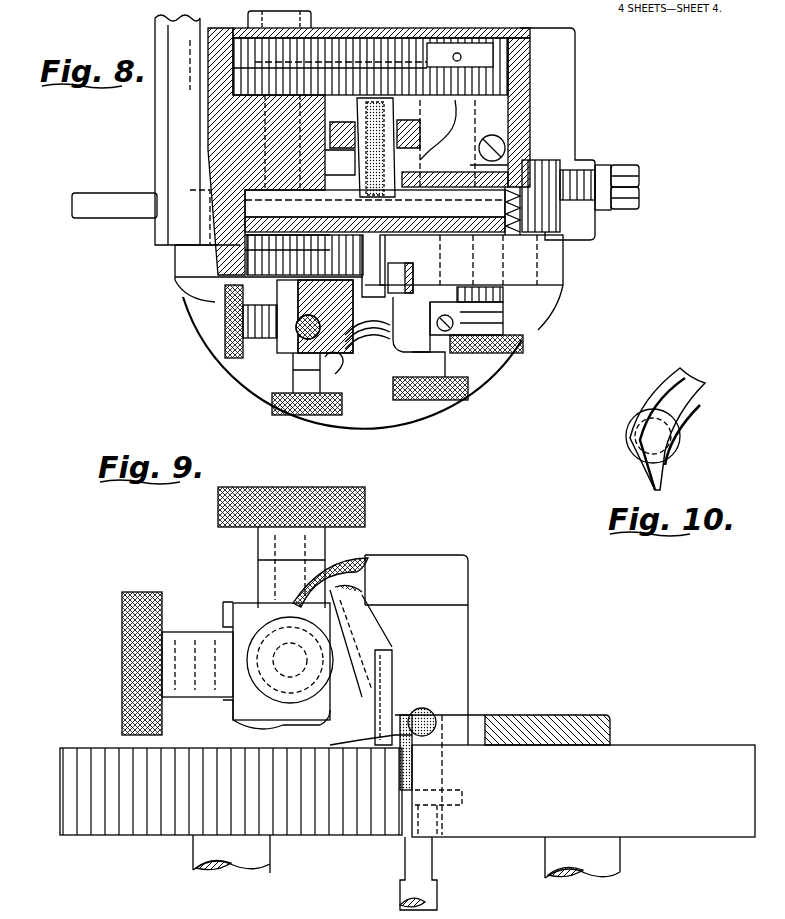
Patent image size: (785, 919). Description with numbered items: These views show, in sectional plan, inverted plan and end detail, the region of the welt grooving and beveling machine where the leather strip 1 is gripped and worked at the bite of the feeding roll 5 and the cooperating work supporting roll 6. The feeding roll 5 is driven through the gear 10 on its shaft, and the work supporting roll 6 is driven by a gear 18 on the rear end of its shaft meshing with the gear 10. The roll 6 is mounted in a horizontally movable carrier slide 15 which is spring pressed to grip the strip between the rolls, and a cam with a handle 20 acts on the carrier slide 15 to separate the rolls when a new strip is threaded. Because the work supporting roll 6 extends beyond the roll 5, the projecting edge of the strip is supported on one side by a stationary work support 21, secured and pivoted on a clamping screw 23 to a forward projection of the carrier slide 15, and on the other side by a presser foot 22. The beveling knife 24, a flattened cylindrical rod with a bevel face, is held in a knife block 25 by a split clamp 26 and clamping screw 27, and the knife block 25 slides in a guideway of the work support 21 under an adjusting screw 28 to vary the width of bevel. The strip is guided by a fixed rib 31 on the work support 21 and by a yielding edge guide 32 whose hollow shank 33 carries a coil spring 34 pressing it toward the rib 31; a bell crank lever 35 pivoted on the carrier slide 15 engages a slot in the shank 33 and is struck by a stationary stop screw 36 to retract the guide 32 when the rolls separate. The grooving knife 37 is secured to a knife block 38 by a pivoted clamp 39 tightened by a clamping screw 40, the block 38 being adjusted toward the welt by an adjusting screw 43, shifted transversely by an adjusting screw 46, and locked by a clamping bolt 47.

In FIG. 8, the leather strip 1 is at (395, 285).
In FIG. 8, the feeding roll 5 is at (245, 255).
In FIG. 9, the feeding roll 5 is at (86, 755).
In FIG. 8, the work supporting roll 6 is at (515, 270).
In FIG. 9, the work supporting roll 6 is at (675, 755).
In FIG. 8, the gear 10 is at (322, 45).
In FIG. 8, the carrier slide 15 is at (375, 211).
In FIG. 8, the gear 18 is at (498, 73).
In FIG. 8, the handle 20 is at (106, 198).
In FIG. 8, the work support 21 is at (460, 305).
In FIG. 9, the work support 21 is at (475, 718).
In FIG. 9, the presser foot 22 is at (405, 715).
In FIG. 8, the clamping screw 23 is at (525, 350).
In FIG. 9, the beveling knife 24 is at (425, 710).
In FIG. 8, the knife block 25 is at (392, 335).
In FIG. 8, the split clamp 26 is at (380, 330).
In FIG. 8, the clamping screw 27 is at (370, 330).
In FIG. 8, the adjusting screw 28 is at (470, 410).
In FIG. 9, the rib 31 is at (405, 712).
In FIG. 8, the yielding edge guide 32 is at (378, 273).
In FIG. 10, the yielding edge guide 32 is at (650, 410).
In FIG. 8, the shank 33 is at (393, 120).
In FIG. 9, the shank 33 is at (432, 890).
In FIG. 10, the shank 33 is at (680, 446).
In FIG. 8, the coil spring 34 is at (366, 185).
In FIG. 8, the bell crank lever 35 is at (340, 165).
In FIG. 8, the stop screw 36 is at (610, 170).
In FIG. 9, the grooving knife 37 is at (412, 742).
In FIG. 9, the knife block 38 is at (395, 735).
In FIG. 9, the pivoted clamp 39 is at (383, 691).
In FIG. 9, the clamping screw 40 is at (358, 559).
In FIG. 8, the adjusting screw 43 is at (225, 358).
In FIG. 9, the adjusting screw 43 is at (122, 598).
In FIG. 8, the adjusting screw 46 is at (280, 415).
In FIG. 9, the adjusting screw 46 is at (365, 514).
In FIG. 8, the clamping bolt 47 is at (300, 345).
In FIG. 9, the clamping bolt 47 is at (280, 644).